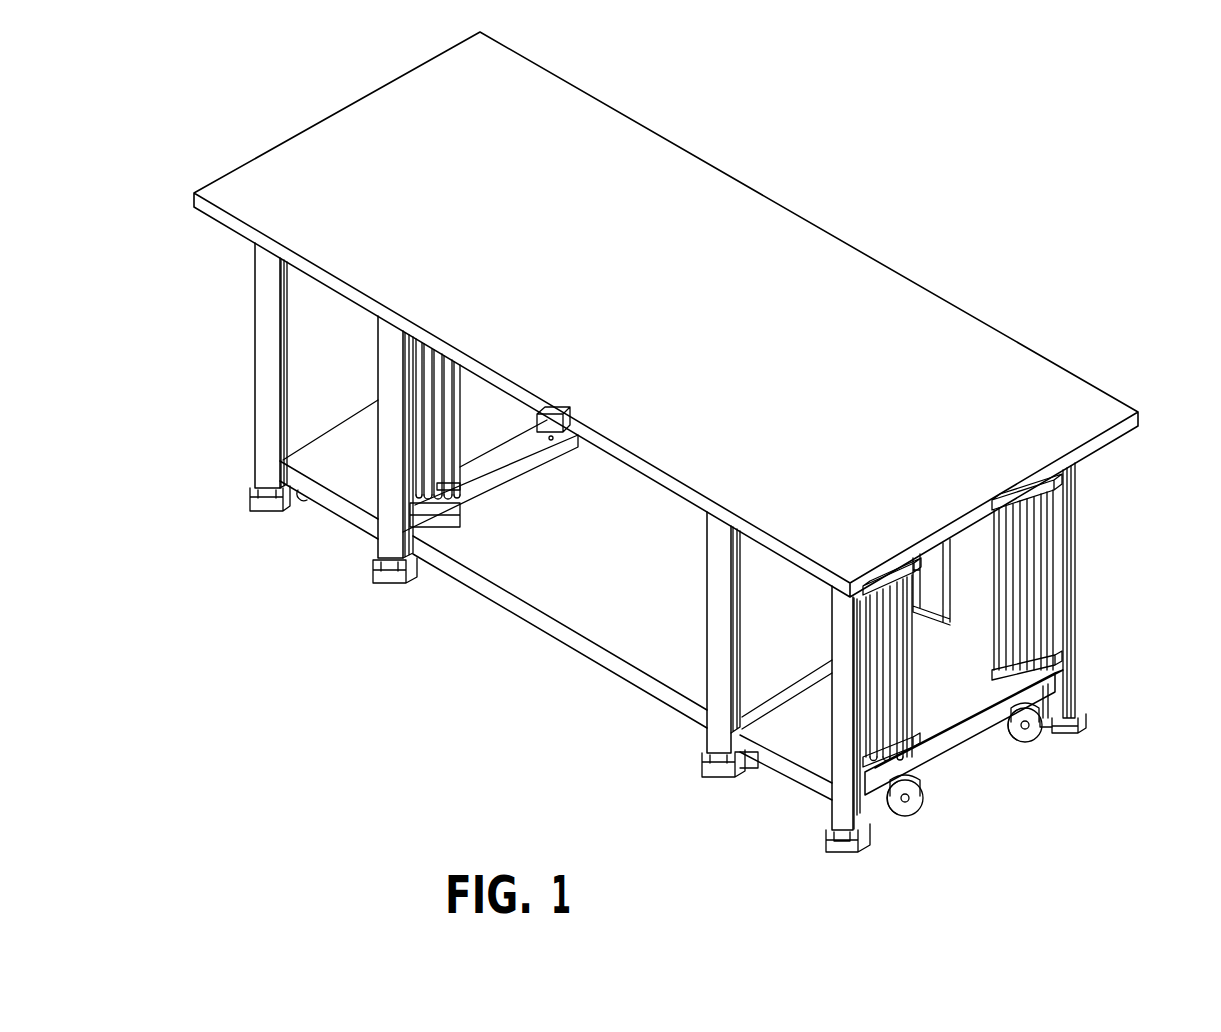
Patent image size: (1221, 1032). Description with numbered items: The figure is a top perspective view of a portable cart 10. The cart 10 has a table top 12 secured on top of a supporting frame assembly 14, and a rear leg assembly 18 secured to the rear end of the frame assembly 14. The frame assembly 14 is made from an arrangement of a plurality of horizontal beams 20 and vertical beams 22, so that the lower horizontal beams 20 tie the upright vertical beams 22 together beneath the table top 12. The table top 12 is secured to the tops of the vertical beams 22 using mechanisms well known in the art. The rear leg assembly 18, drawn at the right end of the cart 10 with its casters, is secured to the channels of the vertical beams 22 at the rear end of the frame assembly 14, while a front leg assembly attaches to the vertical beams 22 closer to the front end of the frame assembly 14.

The portable cart 10 is at (1096, 273).
The table top 12 is at (765, 268).
The supporting frame assembly 14 is at (566, 710).
The rear leg assembly 18 is at (1102, 575).
The horizontal beams 20 is at (500, 598).
The vertical beams 22 is at (847, 708).